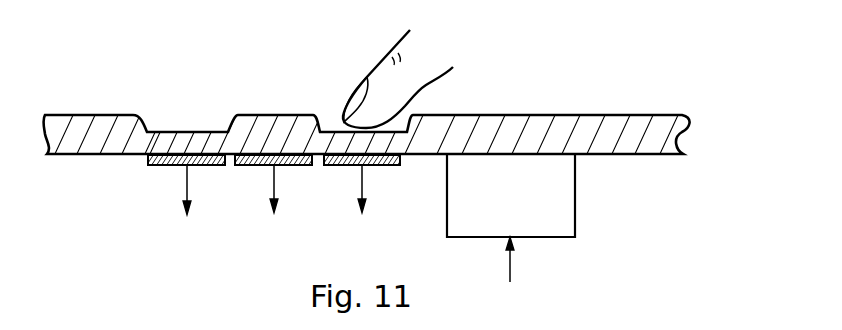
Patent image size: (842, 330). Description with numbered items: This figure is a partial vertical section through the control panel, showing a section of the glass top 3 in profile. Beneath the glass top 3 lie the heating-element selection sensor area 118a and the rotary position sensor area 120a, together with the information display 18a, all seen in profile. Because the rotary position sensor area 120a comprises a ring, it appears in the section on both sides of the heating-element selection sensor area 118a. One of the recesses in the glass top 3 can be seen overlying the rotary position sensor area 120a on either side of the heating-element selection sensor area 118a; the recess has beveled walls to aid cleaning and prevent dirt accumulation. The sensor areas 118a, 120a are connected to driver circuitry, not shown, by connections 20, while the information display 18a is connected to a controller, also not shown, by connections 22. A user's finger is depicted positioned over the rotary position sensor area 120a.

The glass top 3 is at (688, 132).
The rotary position sensor area 120a is at (157, 166).
The heating-element selection sensor area 118a is at (255, 166).
The connections 20 is at (353, 188).
The information display 18a is at (575, 188).
The connections 22 is at (512, 262).